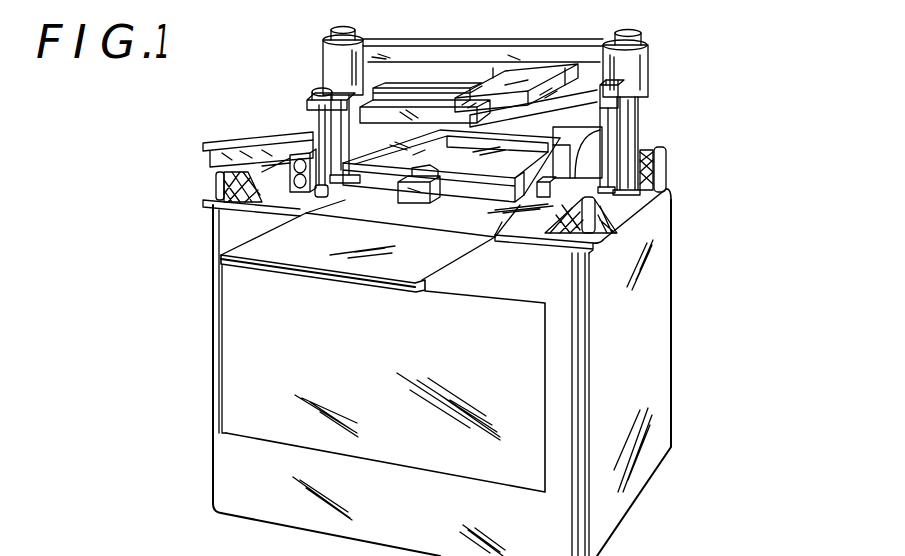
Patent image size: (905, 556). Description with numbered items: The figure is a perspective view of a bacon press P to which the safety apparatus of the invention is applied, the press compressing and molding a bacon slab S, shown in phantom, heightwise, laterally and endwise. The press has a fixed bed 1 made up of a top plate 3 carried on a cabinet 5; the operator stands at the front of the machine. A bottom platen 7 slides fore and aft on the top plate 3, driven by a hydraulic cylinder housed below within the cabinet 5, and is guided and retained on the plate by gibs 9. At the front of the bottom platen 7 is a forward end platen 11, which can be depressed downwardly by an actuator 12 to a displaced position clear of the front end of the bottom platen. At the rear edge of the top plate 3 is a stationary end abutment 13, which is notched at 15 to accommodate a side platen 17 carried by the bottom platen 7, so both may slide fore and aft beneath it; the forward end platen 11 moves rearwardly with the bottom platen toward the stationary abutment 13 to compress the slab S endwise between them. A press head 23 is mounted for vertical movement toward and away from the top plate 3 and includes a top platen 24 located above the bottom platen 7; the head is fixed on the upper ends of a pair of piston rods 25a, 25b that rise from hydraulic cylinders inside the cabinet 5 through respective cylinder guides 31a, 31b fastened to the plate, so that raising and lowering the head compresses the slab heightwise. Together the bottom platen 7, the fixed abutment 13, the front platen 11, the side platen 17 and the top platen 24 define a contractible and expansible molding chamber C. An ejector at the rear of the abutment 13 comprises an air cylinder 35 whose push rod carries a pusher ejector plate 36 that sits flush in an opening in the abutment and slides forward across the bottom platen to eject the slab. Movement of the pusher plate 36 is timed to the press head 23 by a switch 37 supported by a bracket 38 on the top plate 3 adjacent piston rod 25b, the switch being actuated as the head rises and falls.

The fixed bed 1 is at (438, 279).
The top plate 3 is at (290, 206).
The cabinet 5 is at (660, 419).
The bottom platen 7 is at (450, 163).
The gibs 9 is at (640, 172).
The forward end platen 11 is at (484, 168).
The actuator 12 is at (357, 140).
The stationary end abutment 13 is at (618, 95).
The notch 15 is at (600, 137).
The side platen 17 is at (540, 205).
The press head 23 is at (492, 46).
The top platen 24 is at (390, 113).
The piston rod 25a is at (341, 30).
The piston rod 25b is at (636, 34).
The cylinder guide 31a is at (333, 178).
The cylinder guide 31b is at (627, 208).
The air cylinder 35 is at (630, 112).
The pusher ejector plate 36 is at (540, 112).
The switch 37 is at (614, 102).
The bracket 38 is at (613, 125).
The molding chamber C is at (447, 117).
The bacon slab S is at (524, 112).
The bacon press P is at (749, 294).